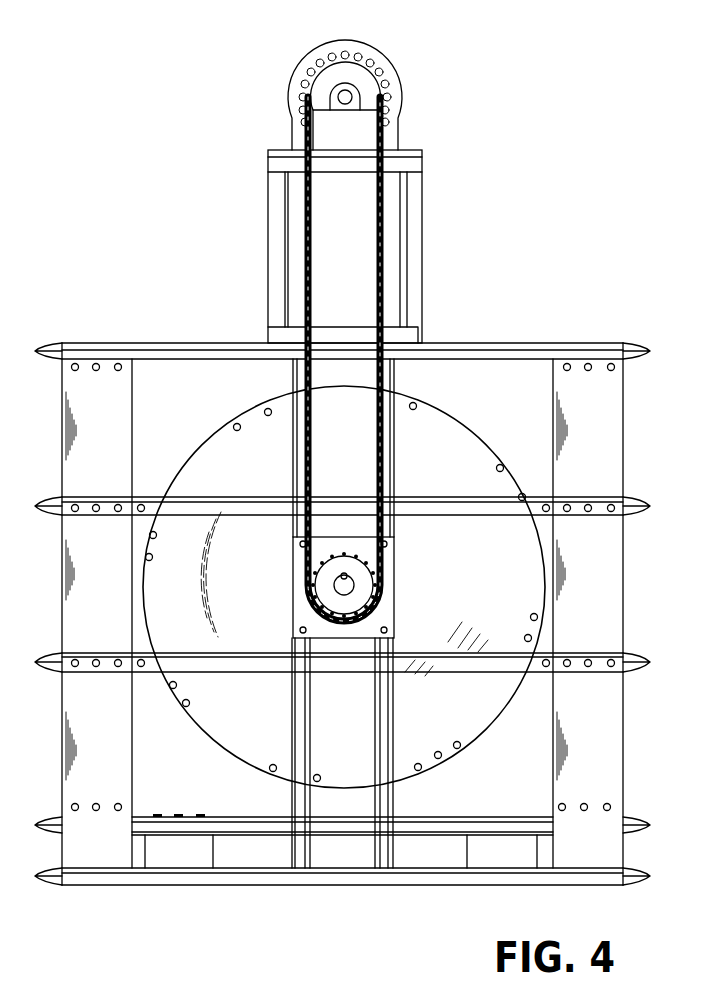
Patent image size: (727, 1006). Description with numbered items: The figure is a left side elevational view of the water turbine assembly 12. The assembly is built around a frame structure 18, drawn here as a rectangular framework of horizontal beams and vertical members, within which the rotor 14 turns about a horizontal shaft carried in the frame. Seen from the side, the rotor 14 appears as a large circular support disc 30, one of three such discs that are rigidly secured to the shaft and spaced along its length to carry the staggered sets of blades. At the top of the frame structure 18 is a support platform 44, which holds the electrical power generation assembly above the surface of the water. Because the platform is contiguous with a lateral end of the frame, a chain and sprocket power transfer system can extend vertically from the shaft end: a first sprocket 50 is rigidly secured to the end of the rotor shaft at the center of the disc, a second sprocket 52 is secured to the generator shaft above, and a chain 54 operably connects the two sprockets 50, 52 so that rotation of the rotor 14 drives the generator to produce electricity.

The water turbine assembly 12 is at (129, 88).
The rotor 14 is at (423, 790).
The frame structure 18 is at (564, 332).
The support discs 30 is at (217, 727).
The support platform 44 is at (255, 246).
The first sprocket 50 is at (343, 566).
The second sprocket 52 is at (342, 84).
The chain 54 is at (386, 205).